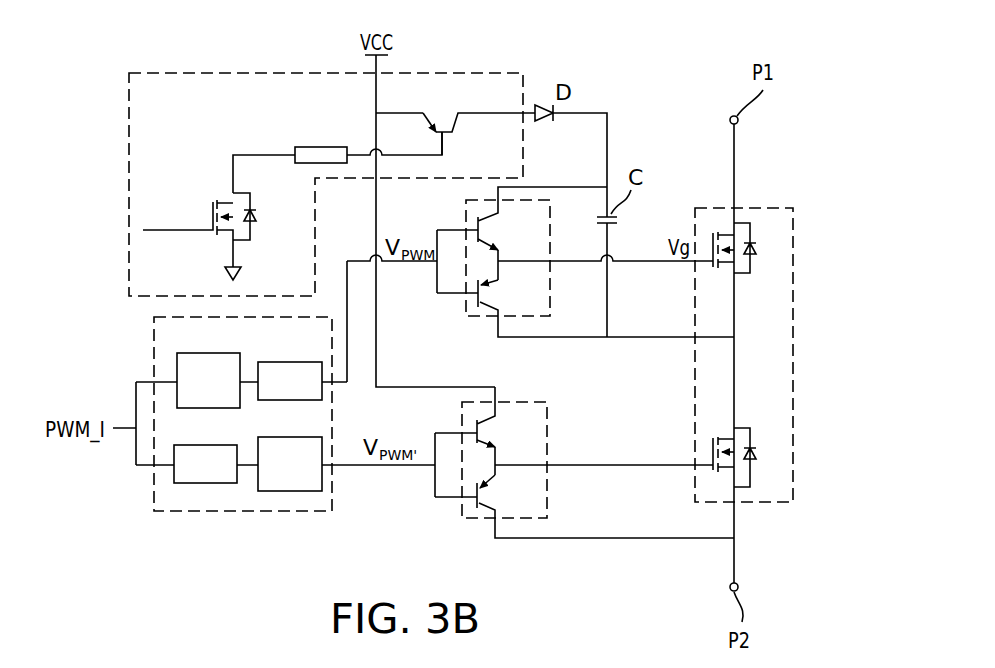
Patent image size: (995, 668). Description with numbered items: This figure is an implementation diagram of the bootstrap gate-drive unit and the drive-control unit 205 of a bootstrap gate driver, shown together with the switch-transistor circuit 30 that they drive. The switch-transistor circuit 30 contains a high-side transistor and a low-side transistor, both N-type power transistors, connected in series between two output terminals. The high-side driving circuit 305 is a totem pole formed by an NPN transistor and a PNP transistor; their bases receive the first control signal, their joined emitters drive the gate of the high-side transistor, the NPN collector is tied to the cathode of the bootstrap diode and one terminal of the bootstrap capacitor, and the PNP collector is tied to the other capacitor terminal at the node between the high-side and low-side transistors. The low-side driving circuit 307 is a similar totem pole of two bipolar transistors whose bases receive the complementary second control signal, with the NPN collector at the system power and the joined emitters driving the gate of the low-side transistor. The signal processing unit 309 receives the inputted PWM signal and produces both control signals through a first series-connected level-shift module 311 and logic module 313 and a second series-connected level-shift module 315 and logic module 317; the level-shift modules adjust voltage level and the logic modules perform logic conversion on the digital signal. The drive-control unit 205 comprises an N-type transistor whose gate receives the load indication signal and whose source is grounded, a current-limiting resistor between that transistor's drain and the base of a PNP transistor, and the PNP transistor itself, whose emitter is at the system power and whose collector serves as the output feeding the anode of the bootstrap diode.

The drive-control unit 205 is at (128, 195).
The switch-transistor circuit 30 is at (758, 207).
The high-side driving circuit 305 is at (486, 318).
The low-side driving circuit 307 is at (550, 425).
The signal processing unit 309 is at (230, 512).
The level-shift module 311 is at (197, 353).
The logic module 313 is at (270, 362).
The level-shift module 315 is at (270, 437).
The logic module 317 is at (197, 445).